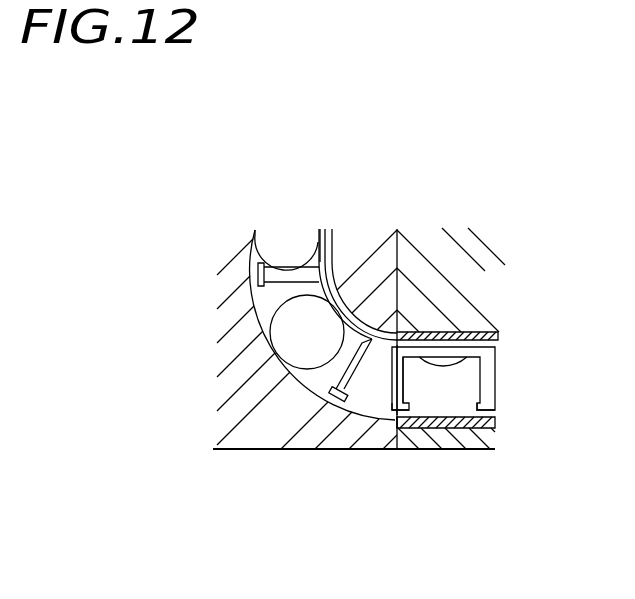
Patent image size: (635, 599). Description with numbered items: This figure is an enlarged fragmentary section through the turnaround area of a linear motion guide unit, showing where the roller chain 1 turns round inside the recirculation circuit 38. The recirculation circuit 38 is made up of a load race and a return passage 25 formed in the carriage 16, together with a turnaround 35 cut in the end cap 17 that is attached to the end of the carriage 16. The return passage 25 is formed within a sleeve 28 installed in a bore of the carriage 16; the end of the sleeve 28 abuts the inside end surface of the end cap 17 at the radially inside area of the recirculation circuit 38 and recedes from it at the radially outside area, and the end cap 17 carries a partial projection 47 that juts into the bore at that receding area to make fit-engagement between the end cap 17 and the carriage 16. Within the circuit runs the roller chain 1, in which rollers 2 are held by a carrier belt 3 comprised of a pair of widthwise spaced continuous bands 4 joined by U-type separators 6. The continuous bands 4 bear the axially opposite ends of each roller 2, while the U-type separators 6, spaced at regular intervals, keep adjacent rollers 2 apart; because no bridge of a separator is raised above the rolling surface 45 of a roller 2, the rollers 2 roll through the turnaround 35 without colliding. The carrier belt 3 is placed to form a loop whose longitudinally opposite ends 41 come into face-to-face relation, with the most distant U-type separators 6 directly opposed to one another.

The roller chain 1 is at (312, 233).
The roller 2 is at (455, 375).
The carrier belt 3 is at (487, 378).
The continuous band 4 is at (344, 252).
The U-type separator 6 is at (331, 401).
The carriage 16 is at (443, 282).
The end cap 17 is at (263, 412).
The return passage 25 is at (423, 412).
The sleeve 28 is at (458, 332).
The turnaround 35 is at (264, 298).
The recirculation circuit 38 is at (377, 400).
The longitudinally opposite ends 41 is at (363, 410).
The rolling surface 45 is at (263, 332).
The partial projection 47 is at (411, 412).